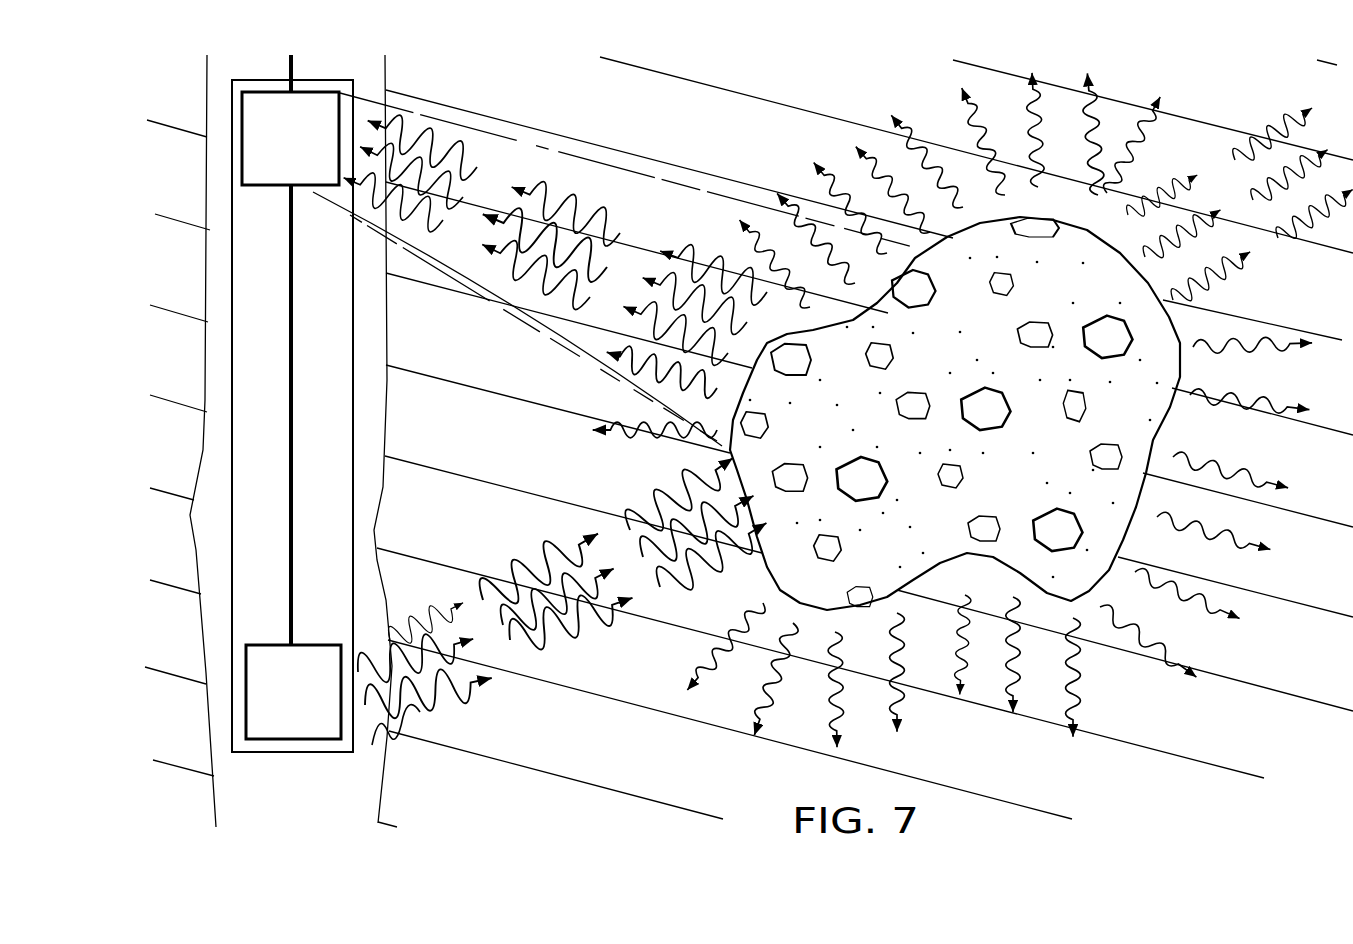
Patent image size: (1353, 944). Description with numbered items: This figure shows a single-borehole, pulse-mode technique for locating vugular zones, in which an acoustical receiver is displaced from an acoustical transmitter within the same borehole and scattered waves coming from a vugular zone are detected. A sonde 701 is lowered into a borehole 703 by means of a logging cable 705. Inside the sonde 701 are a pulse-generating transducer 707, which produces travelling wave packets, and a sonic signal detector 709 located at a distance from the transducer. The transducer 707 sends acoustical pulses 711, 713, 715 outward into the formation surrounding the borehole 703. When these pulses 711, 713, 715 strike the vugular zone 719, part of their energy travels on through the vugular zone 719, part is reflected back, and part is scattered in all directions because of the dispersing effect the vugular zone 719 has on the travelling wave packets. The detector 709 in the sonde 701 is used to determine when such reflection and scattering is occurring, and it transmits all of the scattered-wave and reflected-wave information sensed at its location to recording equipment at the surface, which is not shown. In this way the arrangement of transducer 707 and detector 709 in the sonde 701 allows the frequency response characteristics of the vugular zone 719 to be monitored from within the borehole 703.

The sonde 701 is at (233, 365).
The borehole 703 is at (386, 417).
The logging cable 705 is at (291, 68).
The pulse-generating transducer 707 is at (278, 653).
The sonic signal detector 709 is at (262, 173).
The pulse 711 is at (704, 544).
The pulse 713 is at (566, 655).
The pulse 715 is at (430, 733).
The vugular zone 719 is at (1170, 400).